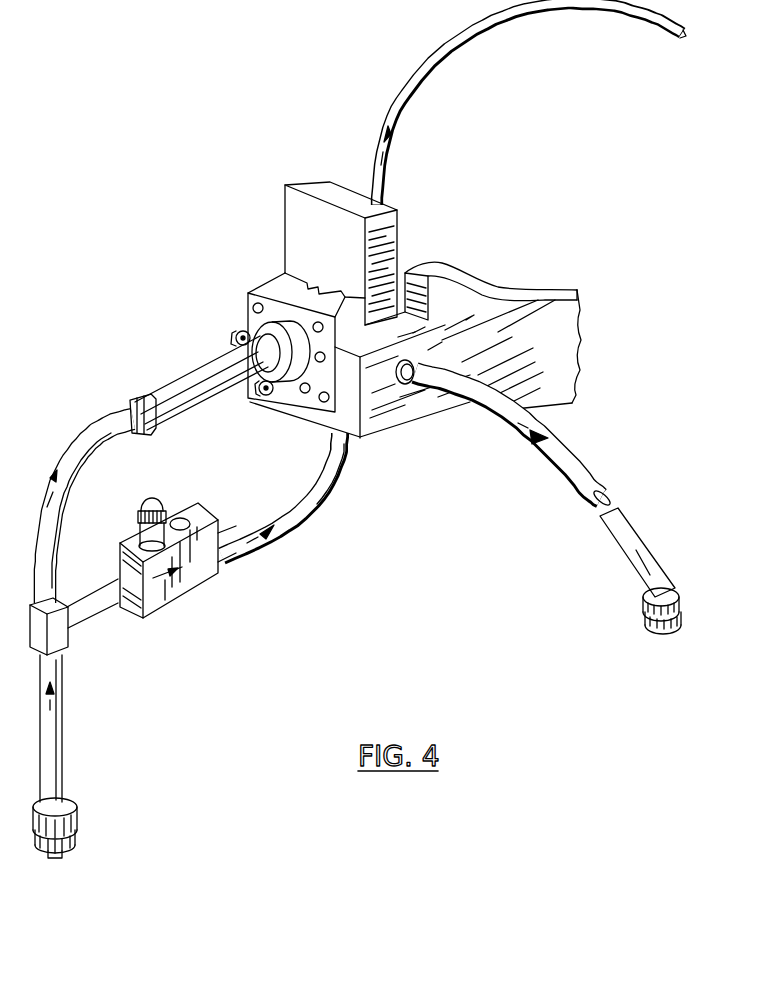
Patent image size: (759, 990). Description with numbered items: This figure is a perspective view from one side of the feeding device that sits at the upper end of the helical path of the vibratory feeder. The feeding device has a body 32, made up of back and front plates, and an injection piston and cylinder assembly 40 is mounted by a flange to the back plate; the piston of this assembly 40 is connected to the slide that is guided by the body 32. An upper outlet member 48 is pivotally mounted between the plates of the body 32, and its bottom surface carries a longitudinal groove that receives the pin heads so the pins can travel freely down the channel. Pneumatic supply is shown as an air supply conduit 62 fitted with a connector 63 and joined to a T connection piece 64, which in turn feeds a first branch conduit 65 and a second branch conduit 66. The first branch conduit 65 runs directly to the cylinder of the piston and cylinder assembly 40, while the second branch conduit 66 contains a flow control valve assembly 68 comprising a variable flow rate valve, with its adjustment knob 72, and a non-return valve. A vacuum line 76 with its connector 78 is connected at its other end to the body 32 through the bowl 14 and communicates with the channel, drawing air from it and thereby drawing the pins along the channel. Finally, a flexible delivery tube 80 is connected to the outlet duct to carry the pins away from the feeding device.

The bowl 14 is at (408, 403).
The body 32 is at (284, 281).
The injection piston and cylinder assembly 40 is at (173, 386).
The upper outlet member 48 is at (396, 233).
The air supply conduit 62 is at (58, 733).
The connector 63 is at (73, 814).
The T connection piece 64 is at (69, 640).
The first branch conduit 65 is at (79, 449).
The second branch conduit 66 is at (318, 488).
The flow control valve assembly 68 is at (194, 584).
The adjustment knob 72 is at (147, 502).
The vacuum line 76 is at (545, 484).
The connector 78 is at (684, 598).
The flexible delivery tube 80 is at (421, 80).